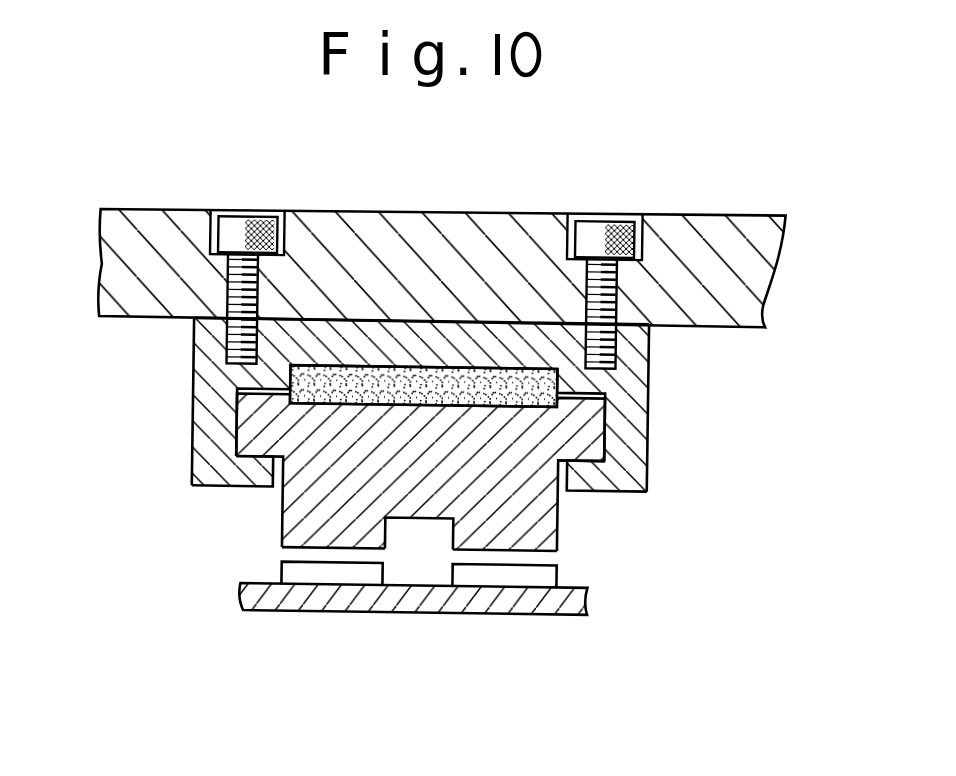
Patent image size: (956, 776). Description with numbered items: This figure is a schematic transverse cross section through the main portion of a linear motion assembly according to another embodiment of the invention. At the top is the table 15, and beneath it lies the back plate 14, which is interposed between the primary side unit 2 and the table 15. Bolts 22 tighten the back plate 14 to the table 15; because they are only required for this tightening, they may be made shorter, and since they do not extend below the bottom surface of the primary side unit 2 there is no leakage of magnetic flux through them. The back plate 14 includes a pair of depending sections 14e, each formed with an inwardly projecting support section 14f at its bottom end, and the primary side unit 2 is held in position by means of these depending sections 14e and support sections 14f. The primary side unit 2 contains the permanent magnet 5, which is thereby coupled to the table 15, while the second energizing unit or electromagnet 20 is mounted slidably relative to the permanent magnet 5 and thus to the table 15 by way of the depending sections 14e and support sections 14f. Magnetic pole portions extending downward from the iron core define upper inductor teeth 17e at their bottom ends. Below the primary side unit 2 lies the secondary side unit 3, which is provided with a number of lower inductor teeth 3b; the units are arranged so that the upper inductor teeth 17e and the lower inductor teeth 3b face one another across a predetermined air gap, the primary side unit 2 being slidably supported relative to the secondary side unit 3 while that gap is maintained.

The primary side unit 2 is at (266, 519).
The secondary side unit 3 is at (272, 620).
The lower inductor teeth 3b is at (291, 570).
The permanent magnet 5 is at (543, 387).
The back plate 14 is at (636, 351).
The depending sections 14e is at (199, 426).
The support section 14f is at (257, 478).
The table 15 is at (722, 207).
The upper inductor teeth 17e is at (302, 531).
The electromagnet 20 is at (422, 523).
The bolt 22 is at (232, 228).